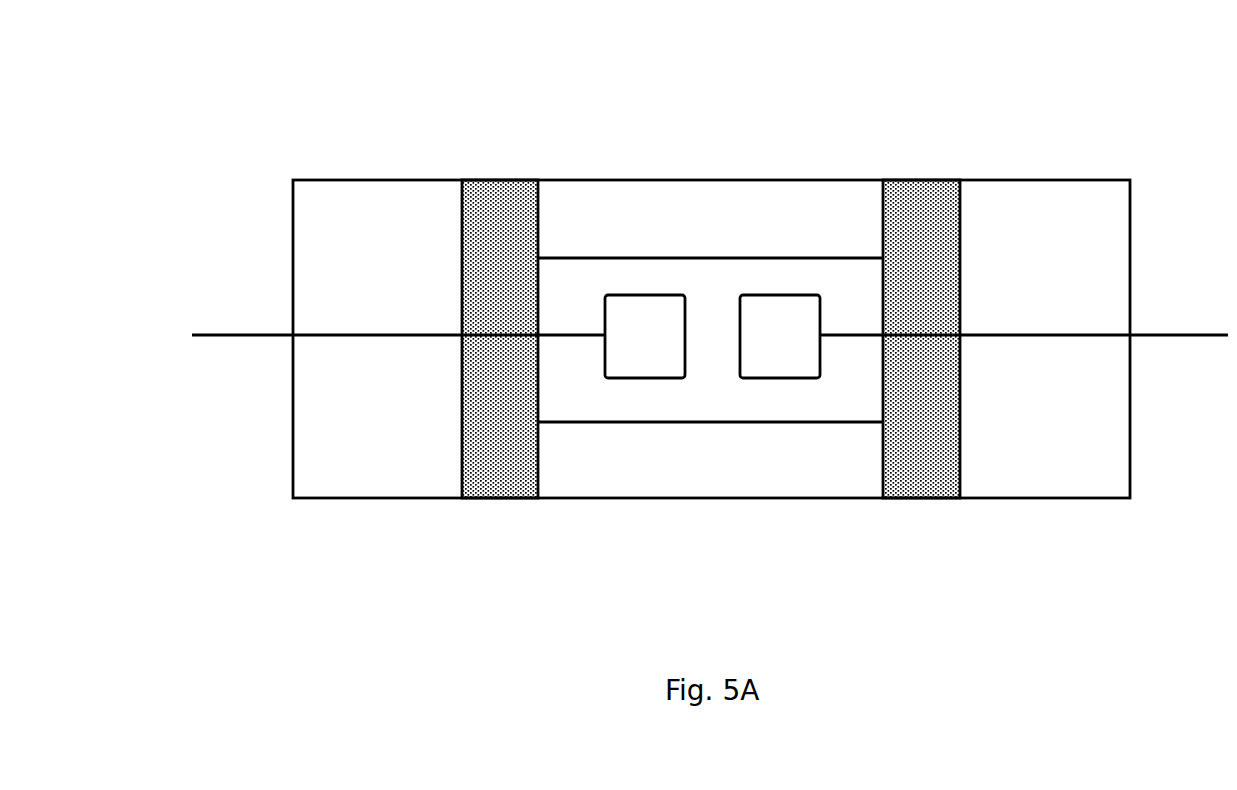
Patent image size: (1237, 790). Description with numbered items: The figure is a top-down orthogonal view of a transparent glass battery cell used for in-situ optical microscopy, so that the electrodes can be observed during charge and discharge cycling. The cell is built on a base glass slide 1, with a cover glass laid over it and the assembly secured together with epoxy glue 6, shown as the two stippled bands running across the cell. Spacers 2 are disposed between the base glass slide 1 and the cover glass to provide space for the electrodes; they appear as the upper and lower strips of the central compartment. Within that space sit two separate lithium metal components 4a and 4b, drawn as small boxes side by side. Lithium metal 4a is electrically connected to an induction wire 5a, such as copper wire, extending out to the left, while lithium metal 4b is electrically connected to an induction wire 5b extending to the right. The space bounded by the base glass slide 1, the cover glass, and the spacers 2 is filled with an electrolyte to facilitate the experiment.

The base glass slide 1 is at (1048, 480).
The spacers 2 is at (713, 210).
The lithium metal 4a is at (645, 336).
The lithium metal 4b is at (780, 336).
The induction wire 5a is at (220, 333).
The induction wire 5b is at (1190, 333).
The epoxy glue 6 is at (500, 178).